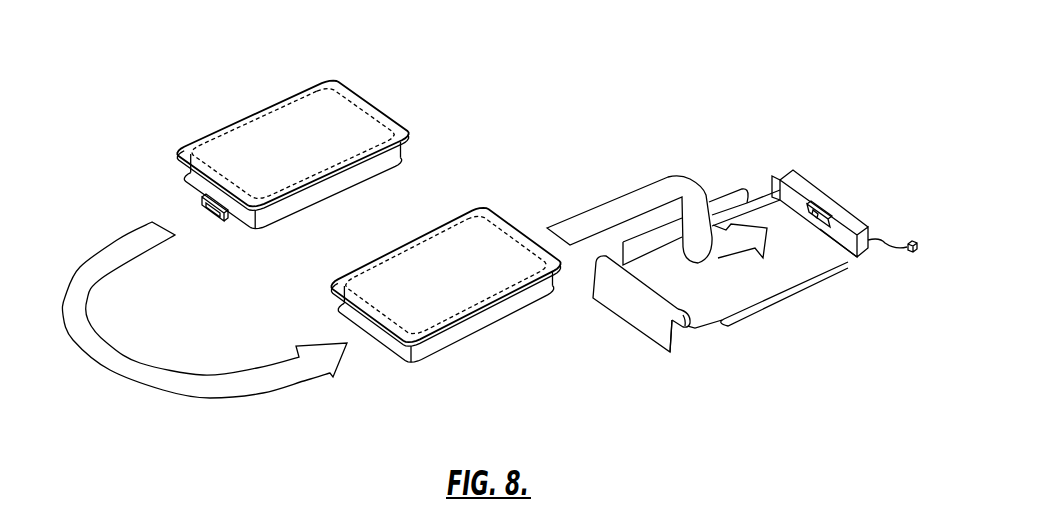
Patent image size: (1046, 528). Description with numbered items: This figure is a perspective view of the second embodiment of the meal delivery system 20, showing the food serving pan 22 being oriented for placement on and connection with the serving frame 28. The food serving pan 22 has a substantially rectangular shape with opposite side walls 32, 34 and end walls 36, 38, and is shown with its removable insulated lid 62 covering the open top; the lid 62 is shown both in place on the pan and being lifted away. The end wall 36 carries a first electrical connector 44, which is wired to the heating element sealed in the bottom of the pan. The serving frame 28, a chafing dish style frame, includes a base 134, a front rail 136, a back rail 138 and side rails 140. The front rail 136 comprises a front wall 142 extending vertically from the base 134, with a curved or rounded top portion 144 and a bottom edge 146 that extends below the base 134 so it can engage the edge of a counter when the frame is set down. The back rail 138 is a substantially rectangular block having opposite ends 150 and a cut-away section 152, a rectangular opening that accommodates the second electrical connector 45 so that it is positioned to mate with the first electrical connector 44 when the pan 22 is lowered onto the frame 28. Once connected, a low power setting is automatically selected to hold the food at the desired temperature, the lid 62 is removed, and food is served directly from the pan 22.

The meal delivery system 20 is at (625, 56).
The food serving pan 22 is at (452, 372).
The insulated lid 62 is at (287, 80).
The side wall 32 is at (333, 193).
The side wall 34 is at (500, 312).
The end wall 36 is at (187, 183).
The end wall 38 is at (380, 342).
The first electrical connector 44 is at (203, 202).
The serving frame 28 is at (758, 137).
The base 134 is at (713, 310).
The front rail 136 is at (620, 320).
The side rails 140 is at (735, 202).
The front wall 142 is at (682, 320).
The rounded top portion 144 is at (612, 253).
The bottom edge 146 is at (660, 352).
The back rail 138 is at (820, 175).
The second electrical connector 45 is at (822, 210).
The opposite ends 150 is at (778, 180).
The cut-away section 152 is at (838, 225).